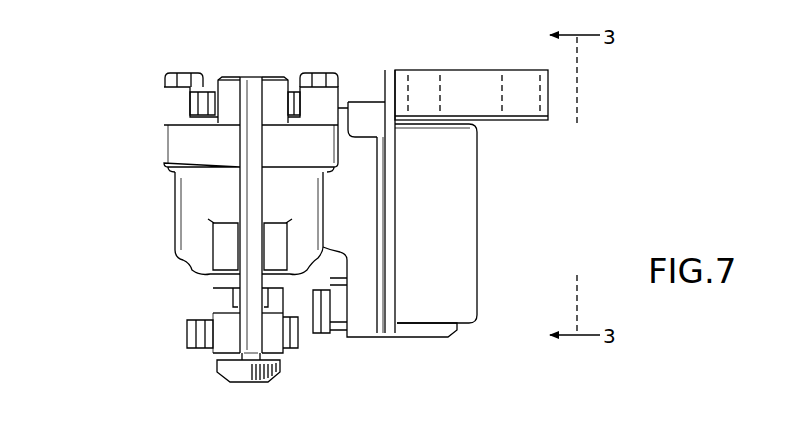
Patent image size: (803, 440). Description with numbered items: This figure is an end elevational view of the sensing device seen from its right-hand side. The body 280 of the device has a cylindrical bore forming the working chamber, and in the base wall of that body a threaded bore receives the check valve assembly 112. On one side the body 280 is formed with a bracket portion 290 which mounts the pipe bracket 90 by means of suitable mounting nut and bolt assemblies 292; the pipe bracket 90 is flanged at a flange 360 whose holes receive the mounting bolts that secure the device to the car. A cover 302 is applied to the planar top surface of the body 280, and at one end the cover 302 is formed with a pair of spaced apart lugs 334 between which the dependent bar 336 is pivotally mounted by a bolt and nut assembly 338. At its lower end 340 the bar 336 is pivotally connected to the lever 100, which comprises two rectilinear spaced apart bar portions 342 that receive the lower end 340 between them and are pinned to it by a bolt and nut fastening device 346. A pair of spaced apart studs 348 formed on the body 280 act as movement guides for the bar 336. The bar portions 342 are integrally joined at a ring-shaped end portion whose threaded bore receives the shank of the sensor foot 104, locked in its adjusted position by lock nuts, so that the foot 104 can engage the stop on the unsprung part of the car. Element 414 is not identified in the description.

The lugs 334 is at (229, 82).
The bar 336 is at (247, 144).
The bolt and nut assembly 338 is at (186, 101).
The body 280 is at (183, 198).
The studs 348 is at (278, 246).
The bar portions 342 is at (217, 298).
The bolt and nut fastening device 346 is at (183, 342).
The lever 100 is at (227, 343).
The lower end 340 is at (250, 333).
The sensor foot 104 is at (251, 386).
The bracket portion 290 is at (365, 115).
The flange 360 is at (548, 100).
The pipe bracket 90 is at (489, 208).
The mounting nut and bolt assemblies 292 is at (334, 324).
The cover 302 is at (440, 439).
The check valve assembly 112 is at (521, 433).
The element 414 is at (441, 434).